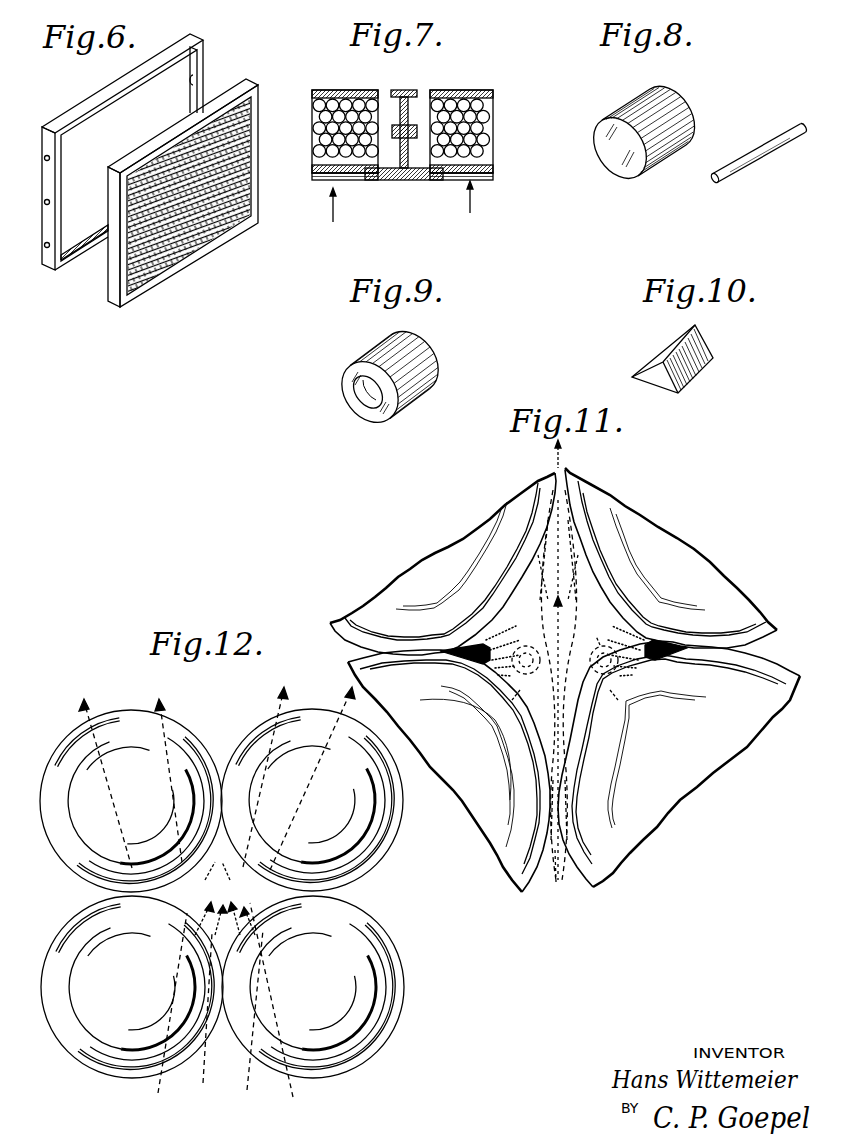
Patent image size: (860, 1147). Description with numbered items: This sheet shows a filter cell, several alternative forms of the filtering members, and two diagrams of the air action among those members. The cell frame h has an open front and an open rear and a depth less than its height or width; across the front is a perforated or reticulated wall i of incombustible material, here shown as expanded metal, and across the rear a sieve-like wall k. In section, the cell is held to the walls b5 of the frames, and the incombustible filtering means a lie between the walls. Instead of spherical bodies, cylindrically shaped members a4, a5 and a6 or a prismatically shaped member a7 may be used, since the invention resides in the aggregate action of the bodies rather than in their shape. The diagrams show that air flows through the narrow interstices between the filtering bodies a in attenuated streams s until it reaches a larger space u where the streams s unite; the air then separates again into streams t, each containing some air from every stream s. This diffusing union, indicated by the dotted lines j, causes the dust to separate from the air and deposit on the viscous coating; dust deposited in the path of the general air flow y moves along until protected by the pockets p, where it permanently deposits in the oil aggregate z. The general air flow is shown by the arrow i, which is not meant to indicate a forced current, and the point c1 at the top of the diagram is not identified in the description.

In FIG. 7, the filtering bodies a is at (323, 126).
In FIG. 11, the filtering bodies a is at (565, 680).
In FIG. 12, the filtering bodies a is at (85, 822).
In FIG. 8, the cylindrically shaped filtering member a4 is at (628, 176).
In FIG. 8, the cylindrically shaped filtering member a5 is at (756, 152).
In FIG. 9, the cylindrically shaped filtering member a6 is at (418, 350).
In FIG. 10, the prismatically shaped filtering member a7 is at (677, 390).
In FIG. 6, the walls of the frames b5 is at (53, 193).
In FIG. 7, the walls of the frames b5 is at (398, 180).
In FIG. 11, the ignition point c1 is at (568, 452).
In FIG. 6, the frame of the cell h is at (115, 287).
In FIG. 6, the front wall i is at (182, 250).
In FIG. 7, the front wall i is at (330, 178).
In FIG. 11, the front wall i is at (557, 867).
In FIG. 7, the rear wall k is at (330, 92).
In FIG. 11, the pockets p is at (475, 637).
In FIG. 11, the oil aggregate z is at (448, 658).
In FIG. 11, the dotted lines indicating diffusing characteristic j is at (565, 668).
In FIG. 11, the larger space u is at (558, 685).
In FIG. 12, the larger space u is at (225, 898).
In FIG. 11, the streams t is at (557, 597).
In FIG. 12, the streams t is at (140, 713).
In FIG. 11, the general air flow path y is at (515, 698).
In FIG. 11, the attenuated streams s is at (557, 810).
In FIG. 12, the attenuated streams s is at (252, 1006).